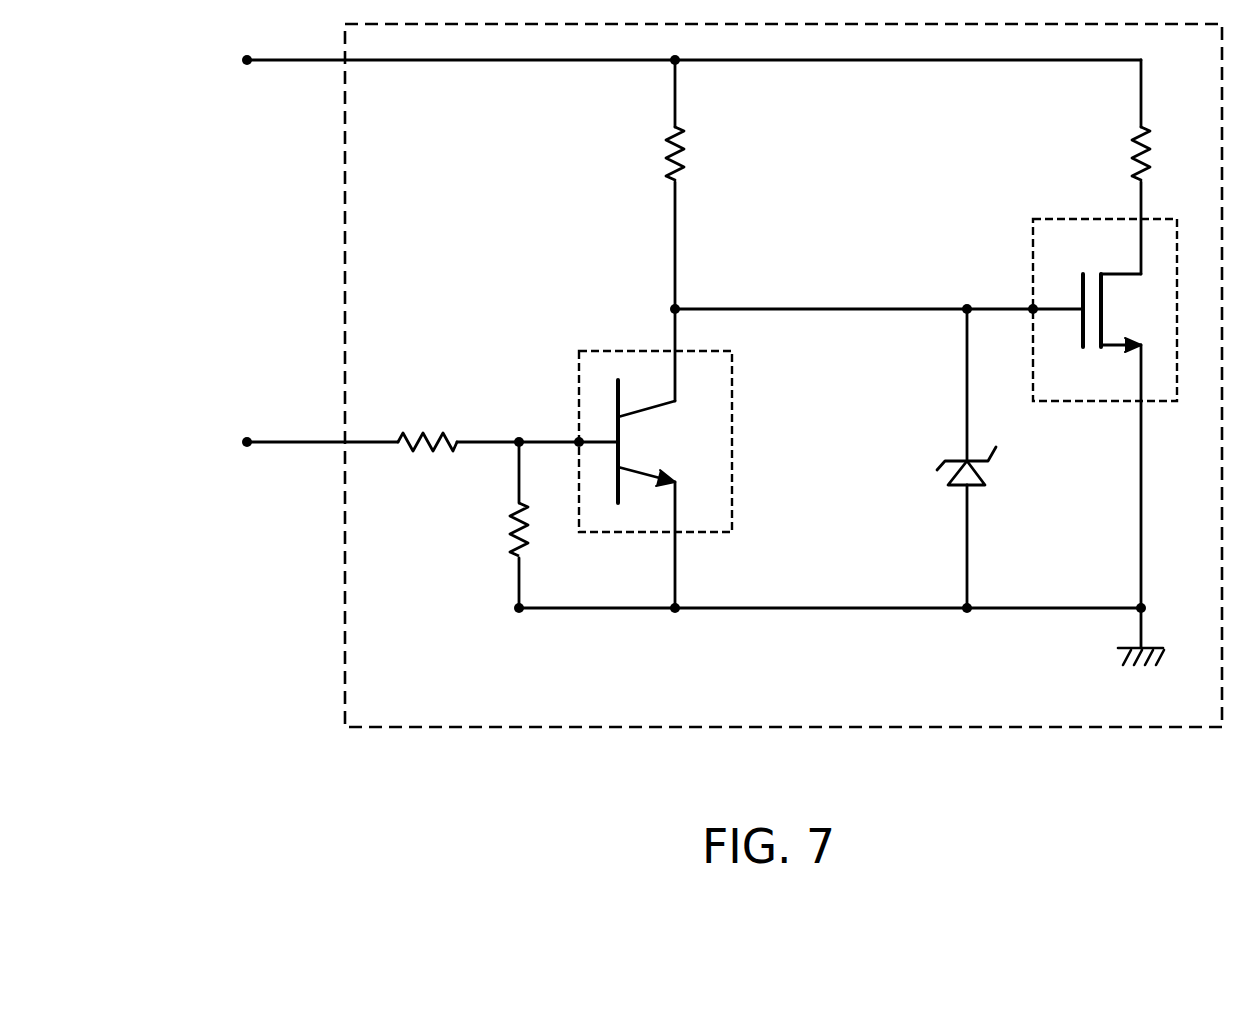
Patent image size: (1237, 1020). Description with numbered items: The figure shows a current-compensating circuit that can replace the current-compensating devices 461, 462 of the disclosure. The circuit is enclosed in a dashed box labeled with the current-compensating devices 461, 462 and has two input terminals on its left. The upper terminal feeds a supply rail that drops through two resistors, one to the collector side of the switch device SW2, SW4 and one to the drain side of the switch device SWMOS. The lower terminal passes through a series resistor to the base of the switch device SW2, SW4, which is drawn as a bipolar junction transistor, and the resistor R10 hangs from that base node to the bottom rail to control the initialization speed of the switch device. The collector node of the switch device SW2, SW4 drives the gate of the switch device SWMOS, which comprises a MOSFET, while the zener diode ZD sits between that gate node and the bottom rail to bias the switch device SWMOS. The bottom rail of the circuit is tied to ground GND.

The current-compensating device 461 is at (697, 375).
The current-compensating device 462 is at (346, 184).
The resistor R10 is at (510, 528).
The switch device SW2 is at (733, 463).
The switch device SW4 is at (706, 533).
The zener diode ZD is at (978, 487).
The switch device SWMOS is at (1037, 218).
The ground GND is at (1123, 681).